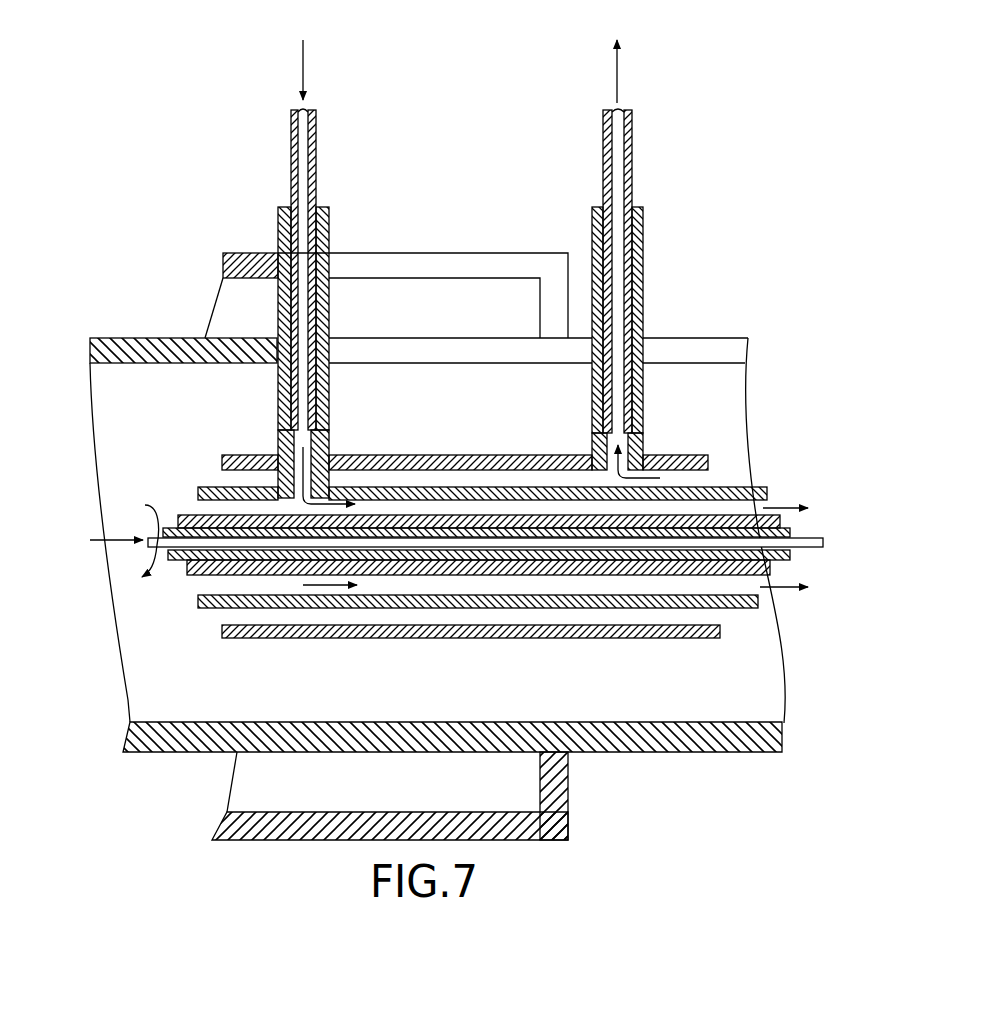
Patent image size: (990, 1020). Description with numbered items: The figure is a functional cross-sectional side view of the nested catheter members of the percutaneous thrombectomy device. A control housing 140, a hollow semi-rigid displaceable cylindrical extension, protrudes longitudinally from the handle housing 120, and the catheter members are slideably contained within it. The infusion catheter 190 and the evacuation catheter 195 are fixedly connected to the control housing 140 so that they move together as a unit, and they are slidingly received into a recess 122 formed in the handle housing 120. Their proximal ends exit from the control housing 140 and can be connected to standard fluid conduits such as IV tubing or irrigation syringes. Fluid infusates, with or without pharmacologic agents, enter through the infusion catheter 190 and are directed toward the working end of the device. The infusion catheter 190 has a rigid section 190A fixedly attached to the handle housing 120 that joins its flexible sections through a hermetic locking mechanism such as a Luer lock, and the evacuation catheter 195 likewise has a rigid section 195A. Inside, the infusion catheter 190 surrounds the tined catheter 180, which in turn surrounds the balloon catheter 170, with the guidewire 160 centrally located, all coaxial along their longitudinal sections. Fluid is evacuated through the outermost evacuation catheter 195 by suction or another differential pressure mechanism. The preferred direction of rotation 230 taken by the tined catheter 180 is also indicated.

The handle housing 120 is at (405, 312).
The recess 122 is at (468, 265).
The control housing 140 is at (718, 350).
The guidewire 160 is at (823, 543).
The balloon catheter 170 is at (790, 533).
The tined catheter 180 is at (780, 507).
The infusion catheter 190 is at (290, 143).
The rigid section 190A is at (328, 395).
The evacuation catheter 195 is at (632, 166).
The evacuation catheter rigid section 195A is at (643, 296).
The direction of rotation 230 is at (150, 580).